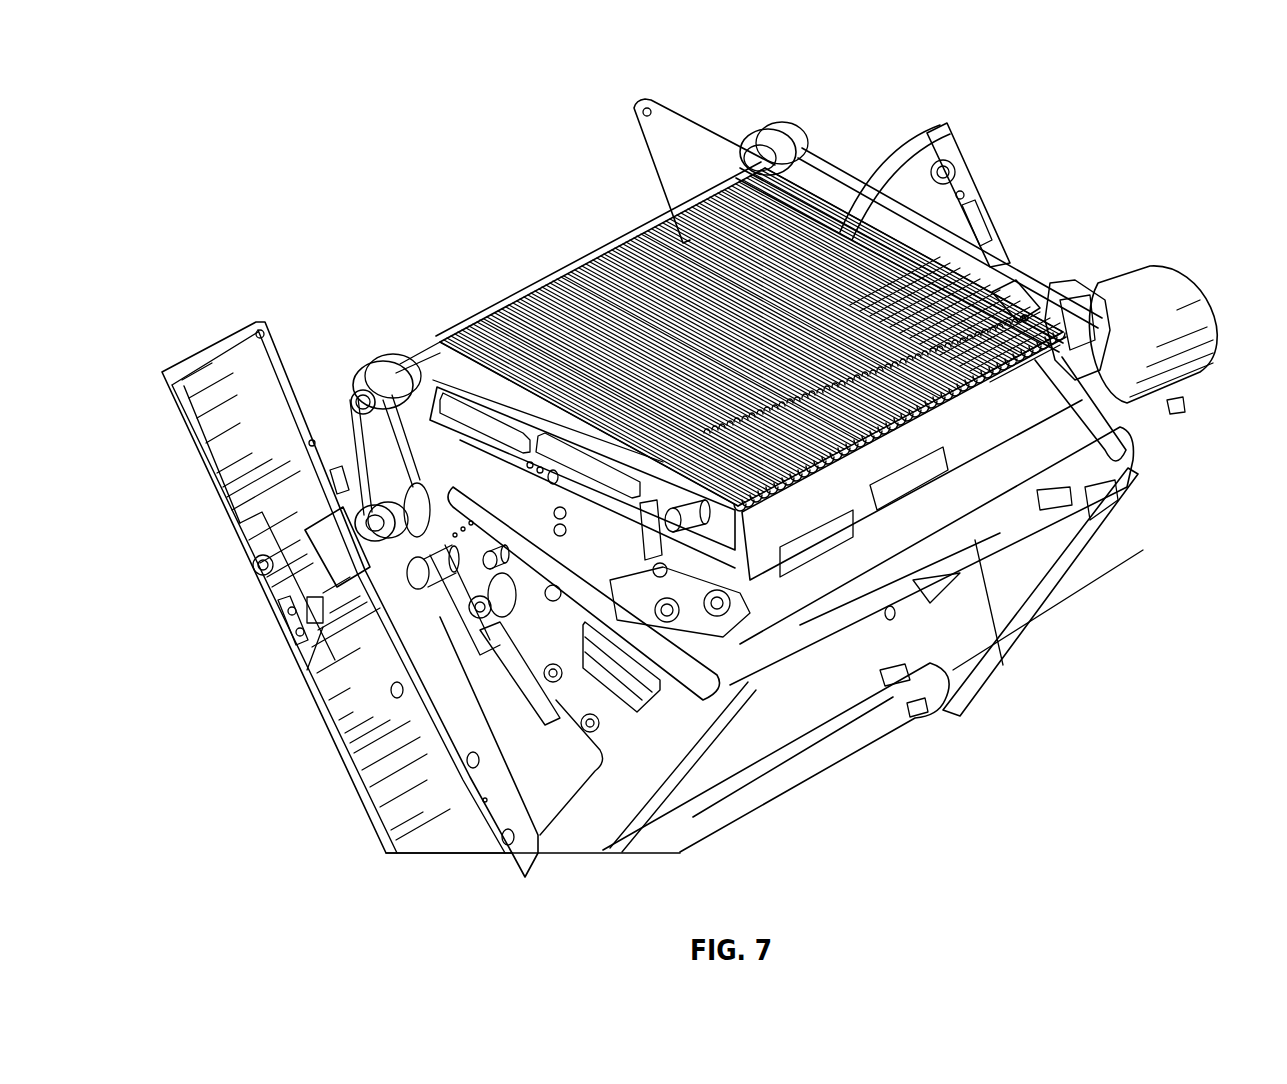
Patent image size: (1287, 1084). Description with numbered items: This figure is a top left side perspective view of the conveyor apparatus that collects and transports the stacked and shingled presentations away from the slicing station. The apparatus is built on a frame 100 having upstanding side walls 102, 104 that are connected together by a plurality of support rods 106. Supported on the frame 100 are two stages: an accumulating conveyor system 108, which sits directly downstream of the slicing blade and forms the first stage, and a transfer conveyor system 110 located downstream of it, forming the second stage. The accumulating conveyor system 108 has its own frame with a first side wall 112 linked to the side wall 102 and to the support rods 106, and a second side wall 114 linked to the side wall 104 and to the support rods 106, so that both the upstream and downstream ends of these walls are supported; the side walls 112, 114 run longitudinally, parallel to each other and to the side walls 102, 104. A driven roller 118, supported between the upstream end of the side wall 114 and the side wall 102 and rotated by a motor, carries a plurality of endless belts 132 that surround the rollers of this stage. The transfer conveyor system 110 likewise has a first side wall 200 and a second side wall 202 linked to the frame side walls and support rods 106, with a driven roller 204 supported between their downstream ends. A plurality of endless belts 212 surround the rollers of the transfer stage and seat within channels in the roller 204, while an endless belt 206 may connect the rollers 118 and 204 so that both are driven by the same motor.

The frame 100 is at (297, 290).
The side wall 102 is at (417, 370).
The side wall 104 is at (817, 160).
The support rods 106 is at (958, 680).
The accumulating conveyor system 108 is at (1005, 300).
The transfer conveyor system 110 is at (840, 232).
The first side wall 112 is at (562, 298).
The second side wall 114 is at (1082, 290).
The driven roller 118 is at (1120, 405).
The endless belts 132 is at (1105, 490).
The first side wall 200 is at (461, 362).
The second side wall 202 is at (780, 203).
The driven roller 204 is at (611, 232).
The endless belt 206 is at (447, 345).
The endless belts 212 is at (690, 237).